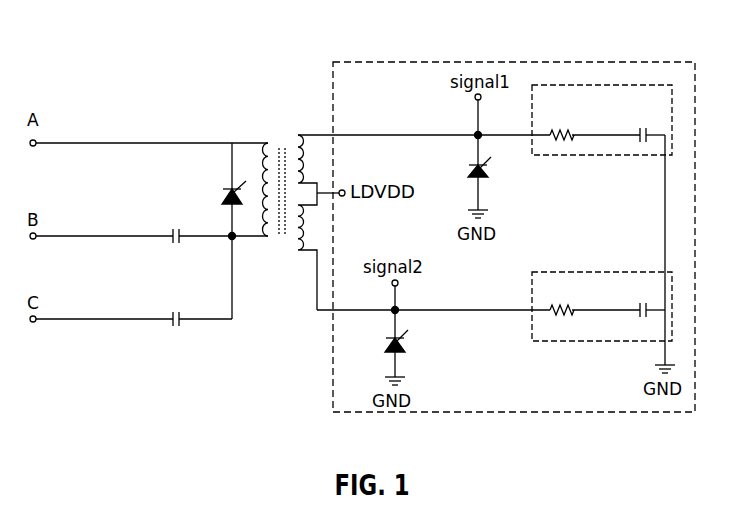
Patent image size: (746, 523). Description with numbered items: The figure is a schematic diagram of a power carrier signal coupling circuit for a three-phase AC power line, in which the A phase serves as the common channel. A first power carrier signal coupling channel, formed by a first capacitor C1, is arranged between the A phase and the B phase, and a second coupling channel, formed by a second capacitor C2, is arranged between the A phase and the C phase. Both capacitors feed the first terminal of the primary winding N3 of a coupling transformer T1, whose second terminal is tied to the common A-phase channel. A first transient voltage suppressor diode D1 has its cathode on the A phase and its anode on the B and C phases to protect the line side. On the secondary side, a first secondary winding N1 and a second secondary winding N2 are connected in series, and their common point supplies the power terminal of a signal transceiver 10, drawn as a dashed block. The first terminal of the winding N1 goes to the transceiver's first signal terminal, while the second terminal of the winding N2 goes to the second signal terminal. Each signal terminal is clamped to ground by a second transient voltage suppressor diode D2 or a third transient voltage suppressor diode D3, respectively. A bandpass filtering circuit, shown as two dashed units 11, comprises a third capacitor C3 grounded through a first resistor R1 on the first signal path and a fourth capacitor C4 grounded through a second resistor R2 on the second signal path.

The signal transceiver 10 is at (490, 63).
The RC filter unit 11 is at (672, 118).
The coupling transformer T1 is at (288, 212).
The first secondary winding N1 is at (314, 164).
The second secondary winding N2 is at (314, 251).
The primary winding N3 is at (259, 202).
The first transient voltage suppressor diode D1 is at (223, 185).
The second transient voltage suppressor diode D2 is at (497, 171).
The third transient voltage suppressor diode D3 is at (411, 343).
The first capacitor C1 is at (181, 250).
The second capacitor C2 is at (181, 332).
The third capacitor C3 is at (641, 124).
The fourth capacitor C4 is at (641, 298).
The first resistor R1 is at (562, 124).
The second resistor R2 is at (562, 298).